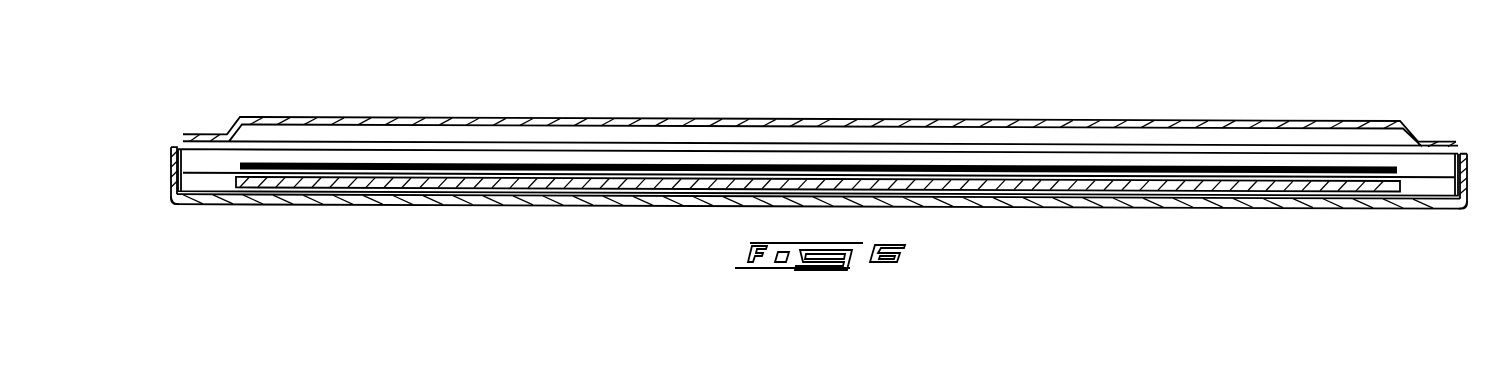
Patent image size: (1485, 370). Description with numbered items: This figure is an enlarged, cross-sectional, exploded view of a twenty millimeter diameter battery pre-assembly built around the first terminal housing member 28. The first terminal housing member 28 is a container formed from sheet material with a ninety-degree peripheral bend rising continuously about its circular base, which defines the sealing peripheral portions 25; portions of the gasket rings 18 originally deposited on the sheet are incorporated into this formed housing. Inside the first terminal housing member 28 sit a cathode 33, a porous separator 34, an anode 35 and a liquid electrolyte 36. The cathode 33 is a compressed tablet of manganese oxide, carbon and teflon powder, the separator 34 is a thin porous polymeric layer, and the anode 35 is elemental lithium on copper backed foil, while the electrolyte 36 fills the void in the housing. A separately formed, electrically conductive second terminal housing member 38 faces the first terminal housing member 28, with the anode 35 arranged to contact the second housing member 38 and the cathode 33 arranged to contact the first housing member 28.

The ring 18 is at (179, 170).
The sealing peripheral portion 25 is at (169, 190).
The first terminal housing member 28 is at (1316, 206).
The cathode 33 is at (1120, 184).
The porous separator 34 is at (1253, 174).
The anode 35 is at (1143, 166).
The liquid electrolyte 36 is at (202, 183).
The second terminal housing member 38 is at (945, 123).